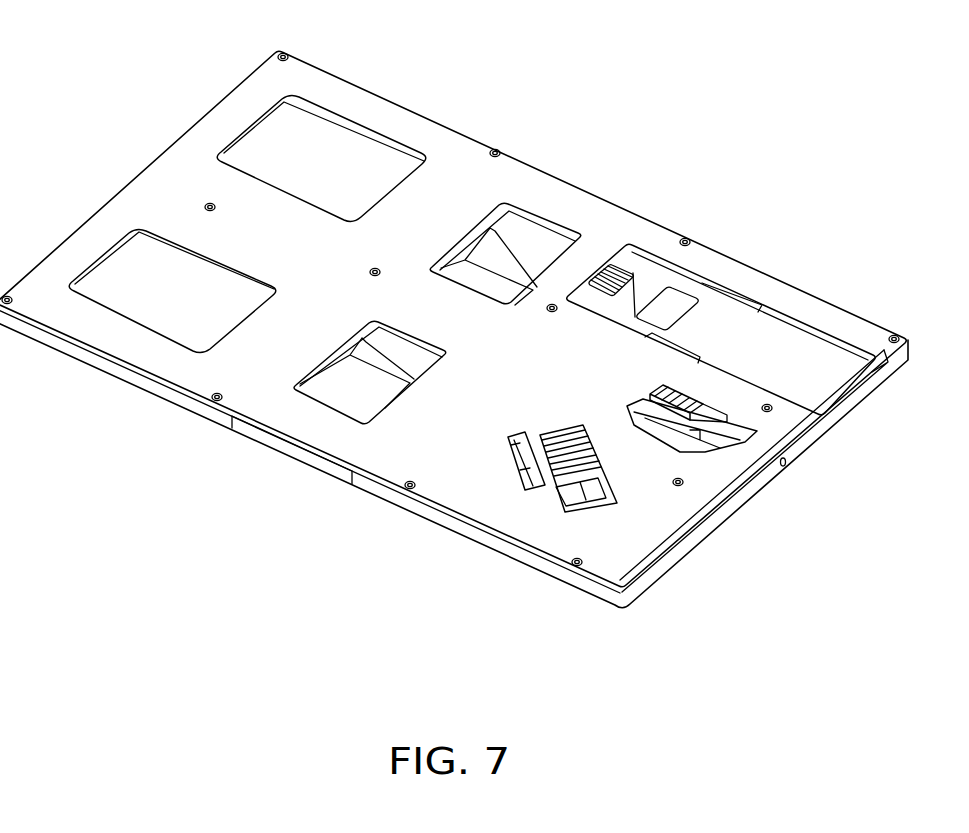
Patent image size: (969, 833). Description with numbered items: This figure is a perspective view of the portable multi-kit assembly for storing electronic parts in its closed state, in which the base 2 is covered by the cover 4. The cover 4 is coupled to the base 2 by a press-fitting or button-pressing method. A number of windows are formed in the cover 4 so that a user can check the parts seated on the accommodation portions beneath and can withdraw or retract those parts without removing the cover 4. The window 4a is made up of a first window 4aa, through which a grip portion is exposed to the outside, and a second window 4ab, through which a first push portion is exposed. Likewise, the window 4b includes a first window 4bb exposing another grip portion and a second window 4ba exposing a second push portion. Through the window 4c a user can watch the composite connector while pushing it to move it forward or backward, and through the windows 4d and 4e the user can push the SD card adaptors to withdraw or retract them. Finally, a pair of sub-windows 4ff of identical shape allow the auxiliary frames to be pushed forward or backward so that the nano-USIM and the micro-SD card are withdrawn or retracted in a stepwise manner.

The base 2 is at (410, 512).
The cover 4 is at (770, 291).
The window 4a is at (563, 575).
The first window 4aa is at (587, 500).
The second window 4ab is at (535, 482).
The window 4b is at (744, 484).
The second window 4ba is at (714, 449).
The first window 4bb is at (748, 434).
The window 4c is at (680, 297).
The window 4d is at (345, 137).
The window 4e is at (116, 265).
The sub-window 4ff is at (528, 230).